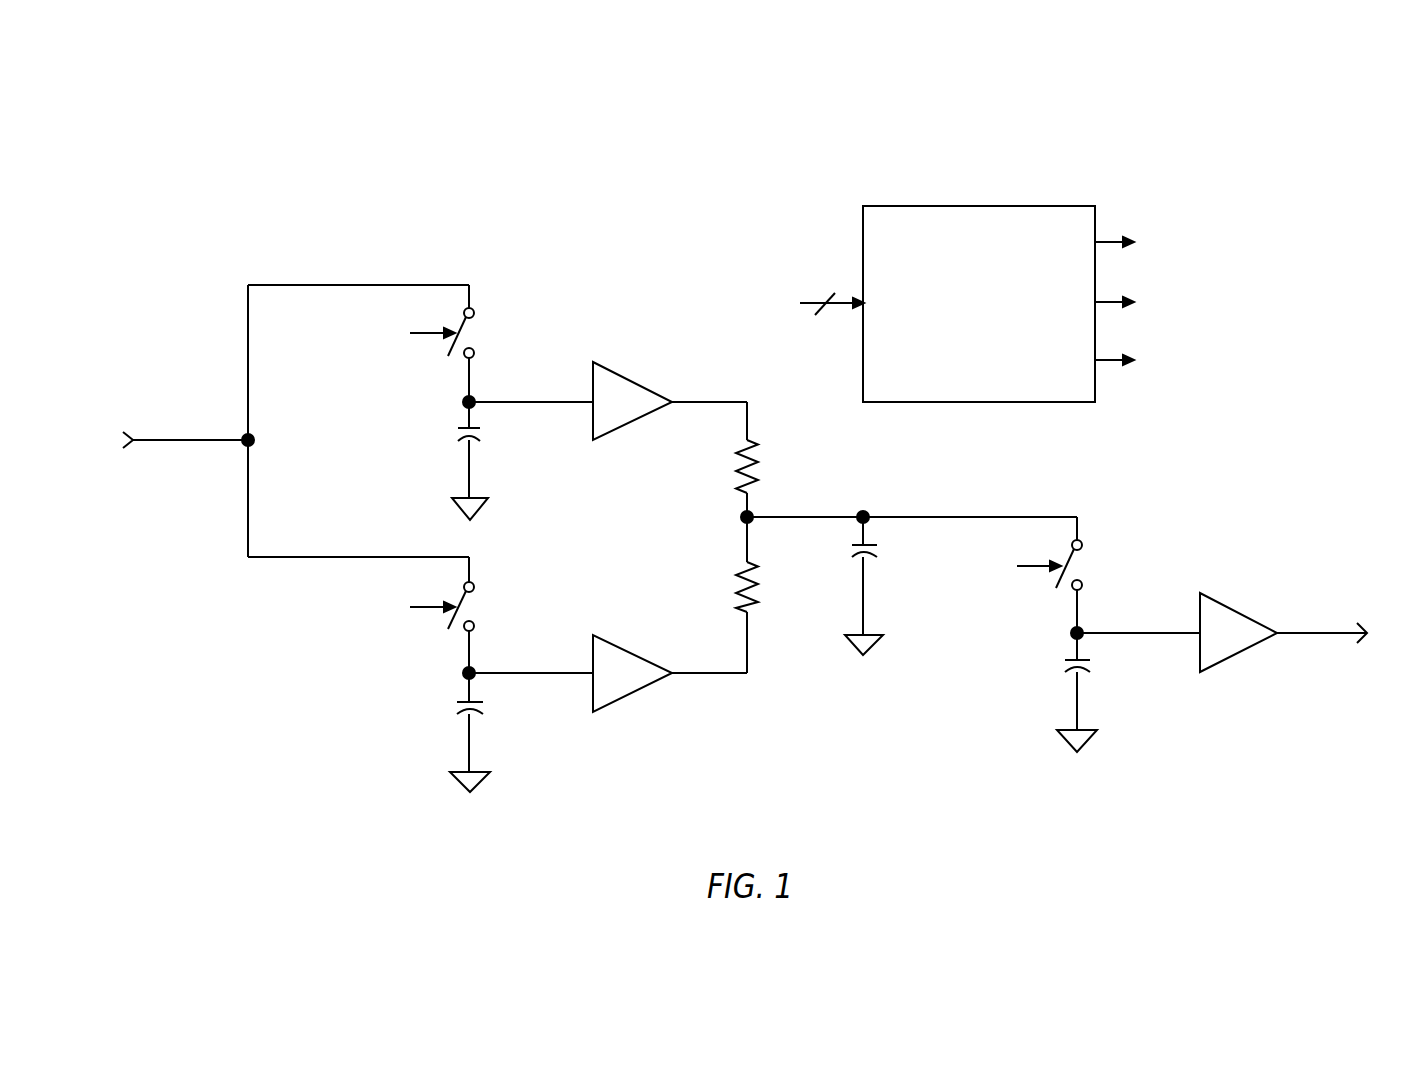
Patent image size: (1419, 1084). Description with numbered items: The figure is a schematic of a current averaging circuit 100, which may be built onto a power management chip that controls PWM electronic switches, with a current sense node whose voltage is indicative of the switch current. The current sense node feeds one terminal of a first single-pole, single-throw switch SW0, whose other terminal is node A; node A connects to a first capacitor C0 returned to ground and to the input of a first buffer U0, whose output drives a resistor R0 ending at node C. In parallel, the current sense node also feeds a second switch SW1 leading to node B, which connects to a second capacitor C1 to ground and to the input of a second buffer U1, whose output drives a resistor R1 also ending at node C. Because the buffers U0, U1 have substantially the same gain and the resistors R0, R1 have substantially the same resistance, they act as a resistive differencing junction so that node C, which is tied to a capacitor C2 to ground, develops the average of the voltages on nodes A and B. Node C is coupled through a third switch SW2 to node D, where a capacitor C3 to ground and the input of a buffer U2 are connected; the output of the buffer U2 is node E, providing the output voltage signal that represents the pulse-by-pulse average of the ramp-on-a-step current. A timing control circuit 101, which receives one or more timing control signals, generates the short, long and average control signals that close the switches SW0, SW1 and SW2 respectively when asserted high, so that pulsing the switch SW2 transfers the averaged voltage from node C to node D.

The current averaging circuit 100 is at (333, 152).
The timing control circuit 101 is at (997, 346).
The first single-pole, single-throw switch SW0 is at (489, 333).
The second single-pole, single-throw switch SW1 is at (488, 606).
The third single-pole, single-throw switch SW2 is at (1097, 565).
The first capacitor C0 is at (487, 437).
The second capacitor C1 is at (486, 710).
The capacitor C2 is at (849, 554).
The capacitor C3 is at (1094, 669).
The resistor R0 is at (769, 466).
The resistor R1 is at (769, 587).
The first buffer U0 is at (630, 413).
The second buffer U1 is at (630, 685).
The buffer U2 is at (1237, 646).